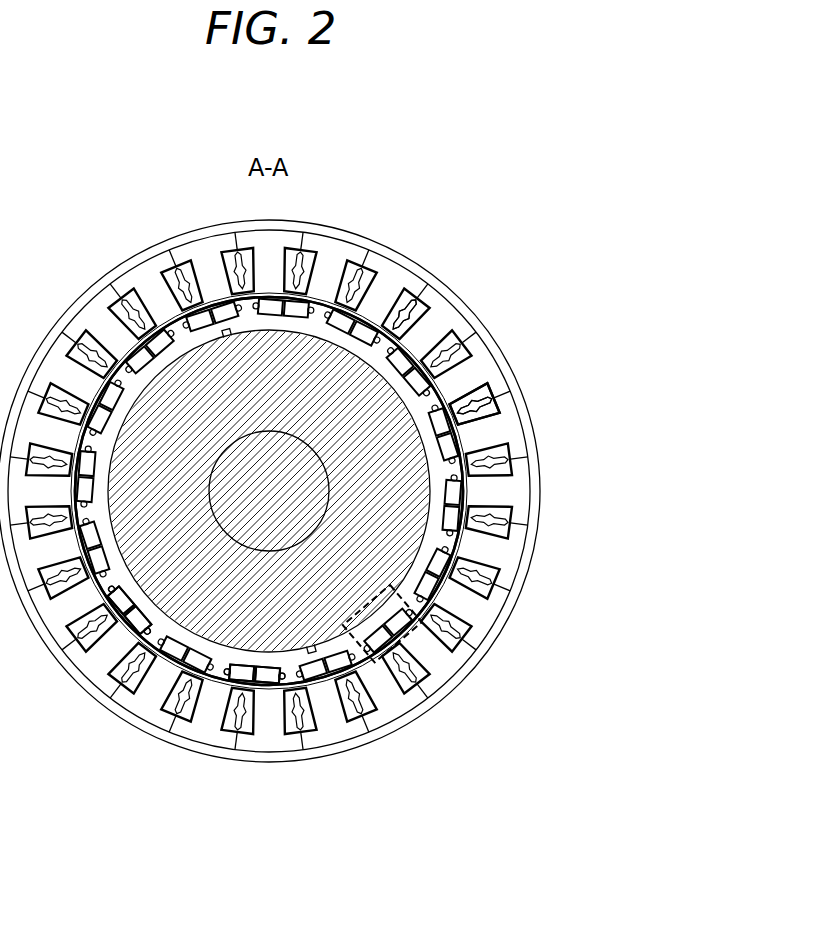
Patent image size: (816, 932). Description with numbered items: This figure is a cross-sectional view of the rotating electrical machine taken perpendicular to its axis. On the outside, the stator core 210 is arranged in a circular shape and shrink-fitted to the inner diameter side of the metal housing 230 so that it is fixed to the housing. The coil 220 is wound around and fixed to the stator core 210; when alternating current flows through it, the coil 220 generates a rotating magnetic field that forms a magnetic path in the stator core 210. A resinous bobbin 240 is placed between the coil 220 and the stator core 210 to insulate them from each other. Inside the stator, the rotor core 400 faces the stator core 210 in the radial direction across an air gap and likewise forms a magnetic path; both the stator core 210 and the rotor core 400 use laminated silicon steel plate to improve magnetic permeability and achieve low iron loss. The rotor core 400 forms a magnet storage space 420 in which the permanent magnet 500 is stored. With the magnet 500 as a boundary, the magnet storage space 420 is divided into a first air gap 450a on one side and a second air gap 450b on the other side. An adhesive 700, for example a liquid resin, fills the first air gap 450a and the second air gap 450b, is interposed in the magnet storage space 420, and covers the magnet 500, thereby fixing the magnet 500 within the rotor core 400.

The stator core 210 is at (484, 375).
The coil 220 is at (487, 394).
The metal housing 230 is at (538, 472).
The resinous bobbin 240 is at (518, 527).
The rotor core 400 is at (437, 533).
The magnet storage space 420 is at (400, 648).
The first air gap 450a is at (222, 672).
The second air gap 450b is at (148, 640).
The magnet 500 is at (412, 652).
The adhesive 700 is at (395, 327).